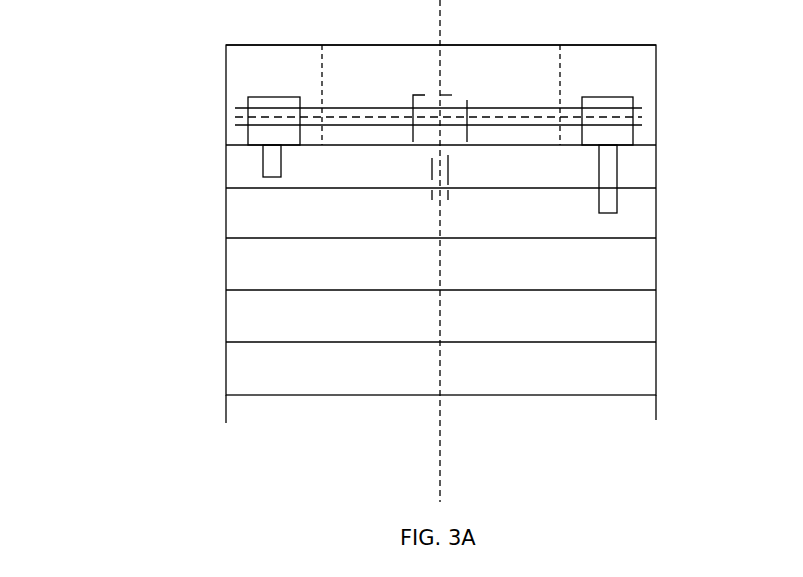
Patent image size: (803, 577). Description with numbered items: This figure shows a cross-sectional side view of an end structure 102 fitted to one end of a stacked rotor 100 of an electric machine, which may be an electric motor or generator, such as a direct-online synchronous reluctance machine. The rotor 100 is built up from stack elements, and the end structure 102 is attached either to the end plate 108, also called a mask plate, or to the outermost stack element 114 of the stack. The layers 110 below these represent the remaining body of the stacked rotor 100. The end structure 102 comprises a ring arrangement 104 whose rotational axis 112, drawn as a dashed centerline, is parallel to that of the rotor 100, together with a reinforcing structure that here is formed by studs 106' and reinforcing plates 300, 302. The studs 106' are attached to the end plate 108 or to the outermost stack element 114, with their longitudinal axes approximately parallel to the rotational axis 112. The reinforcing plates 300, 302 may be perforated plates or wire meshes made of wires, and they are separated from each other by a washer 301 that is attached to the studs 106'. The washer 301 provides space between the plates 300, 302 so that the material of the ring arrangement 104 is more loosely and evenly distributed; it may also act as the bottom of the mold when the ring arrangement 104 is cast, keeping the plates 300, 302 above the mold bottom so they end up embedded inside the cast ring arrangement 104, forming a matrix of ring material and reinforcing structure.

The rotor 100 is at (155, 248).
The end structure 102 is at (210, 85).
The ring arrangement 104 is at (657, 80).
The stud 106' is at (457, 113).
The end plate 108 is at (657, 165).
The metallization layer 110 is at (527, 226).
The rotational axis 112 is at (441, 437).
The stack element 114 is at (527, 180).
The reinforcing plate 300 is at (482, 110).
The washer 301 is at (382, 118).
The reinforcing plate 302 is at (338, 125).